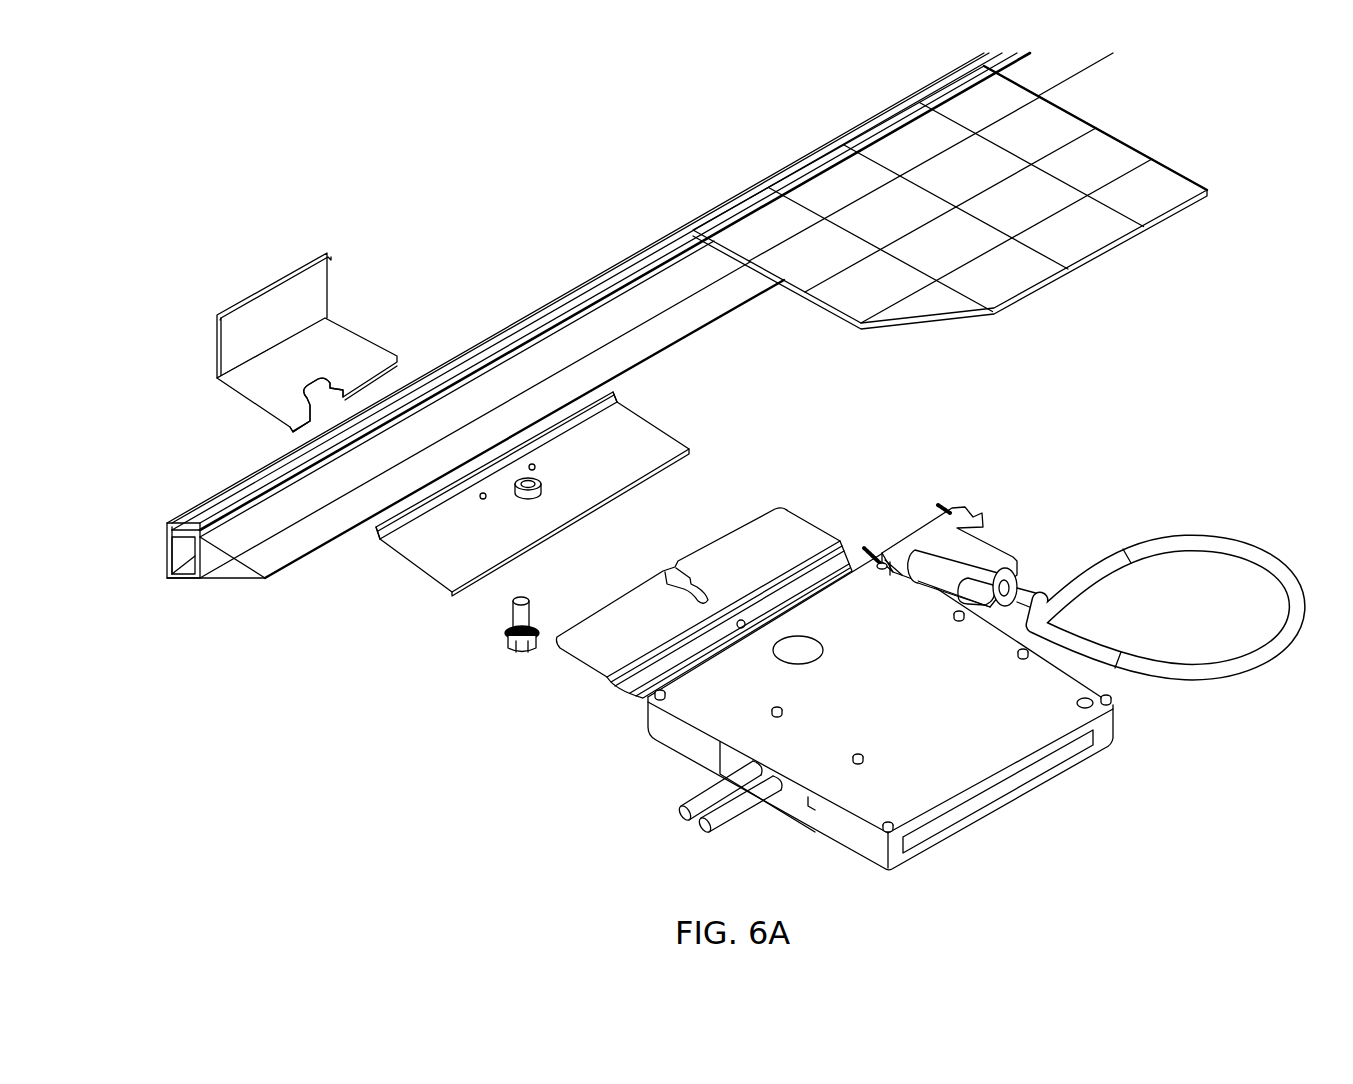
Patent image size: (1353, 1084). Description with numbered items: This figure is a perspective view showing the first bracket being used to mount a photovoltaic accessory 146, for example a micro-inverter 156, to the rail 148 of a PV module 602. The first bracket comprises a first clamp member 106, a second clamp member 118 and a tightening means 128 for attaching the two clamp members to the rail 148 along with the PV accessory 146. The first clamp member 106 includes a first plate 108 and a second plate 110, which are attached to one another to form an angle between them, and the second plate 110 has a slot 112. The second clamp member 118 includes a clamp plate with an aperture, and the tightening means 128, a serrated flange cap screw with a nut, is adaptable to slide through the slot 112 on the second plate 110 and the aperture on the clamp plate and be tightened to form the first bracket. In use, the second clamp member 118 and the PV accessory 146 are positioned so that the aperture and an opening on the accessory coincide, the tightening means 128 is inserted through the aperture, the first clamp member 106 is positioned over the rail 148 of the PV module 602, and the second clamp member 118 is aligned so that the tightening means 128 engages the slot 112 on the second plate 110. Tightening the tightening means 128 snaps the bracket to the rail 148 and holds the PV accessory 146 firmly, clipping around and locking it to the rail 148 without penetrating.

The first clamp member 106 is at (325, 307).
The first plate 108 is at (313, 287).
The second plate 110 is at (360, 348).
The slot 112 is at (300, 389).
The second clamp member 118 is at (663, 422).
The tightening means 128 is at (516, 656).
The PV accessory 146 is at (1016, 796).
The rail 148 is at (676, 230).
The micro-inverter 156 is at (871, 596).
The PV module 602 is at (1056, 103).